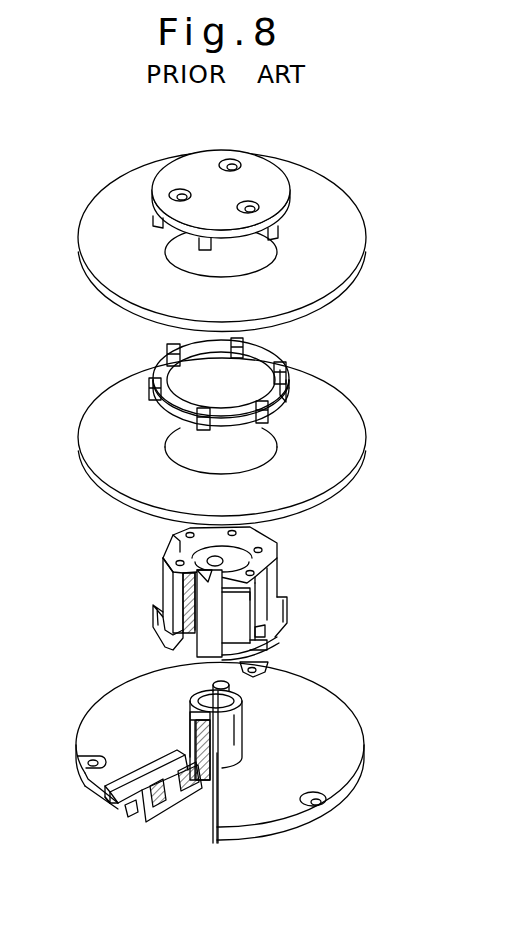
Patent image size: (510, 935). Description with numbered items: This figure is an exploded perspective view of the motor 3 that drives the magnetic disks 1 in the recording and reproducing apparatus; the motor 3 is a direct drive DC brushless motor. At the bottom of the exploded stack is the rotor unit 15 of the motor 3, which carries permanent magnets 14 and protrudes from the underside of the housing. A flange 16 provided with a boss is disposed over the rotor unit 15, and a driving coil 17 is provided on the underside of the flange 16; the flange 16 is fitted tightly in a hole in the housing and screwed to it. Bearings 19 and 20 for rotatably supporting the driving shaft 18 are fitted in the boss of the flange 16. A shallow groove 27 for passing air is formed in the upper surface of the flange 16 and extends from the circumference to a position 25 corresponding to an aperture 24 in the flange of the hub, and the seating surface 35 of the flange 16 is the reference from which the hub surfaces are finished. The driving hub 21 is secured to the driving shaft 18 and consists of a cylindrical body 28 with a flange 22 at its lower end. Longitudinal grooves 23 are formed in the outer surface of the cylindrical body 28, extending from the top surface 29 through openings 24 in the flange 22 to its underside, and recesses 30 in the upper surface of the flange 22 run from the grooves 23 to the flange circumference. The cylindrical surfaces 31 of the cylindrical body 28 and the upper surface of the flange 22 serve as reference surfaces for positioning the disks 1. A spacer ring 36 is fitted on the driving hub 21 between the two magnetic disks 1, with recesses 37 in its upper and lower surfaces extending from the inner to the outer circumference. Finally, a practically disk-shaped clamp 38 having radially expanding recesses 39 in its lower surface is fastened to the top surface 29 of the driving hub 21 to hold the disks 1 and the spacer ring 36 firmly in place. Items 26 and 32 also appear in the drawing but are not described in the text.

The magnetic disks 1 is at (330, 208).
The motor 3 is at (371, 760).
The permanent magnets 14 is at (156, 638).
The rotor unit 15 is at (156, 818).
The flange 16 is at (92, 784).
The driving coil 17 is at (186, 806).
The driving shaft 18 is at (211, 687).
The bearing 19 is at (200, 708).
The bearing 20 is at (200, 785).
The driving hub 21 is at (295, 543).
The flange 22 is at (292, 610).
The longitudinal grooves 23 is at (268, 575).
The openings 24 is at (288, 630).
The position 25 is at (176, 760).
The bar end 26 is at (122, 806).
The shallow groove 27 is at (142, 778).
The cylindrical body 28 is at (162, 580).
The top surface 29 is at (183, 553).
The recesses 30 is at (268, 668).
The cylindrical surfaces 31 is at (258, 597).
The lower tab 32 is at (272, 652).
The seating surface 35 is at (128, 814).
The spacer ring 36 is at (290, 402).
The recesses 37 is at (264, 353).
The clamp 38 is at (258, 153).
The radially expanding recesses 39 is at (280, 224).